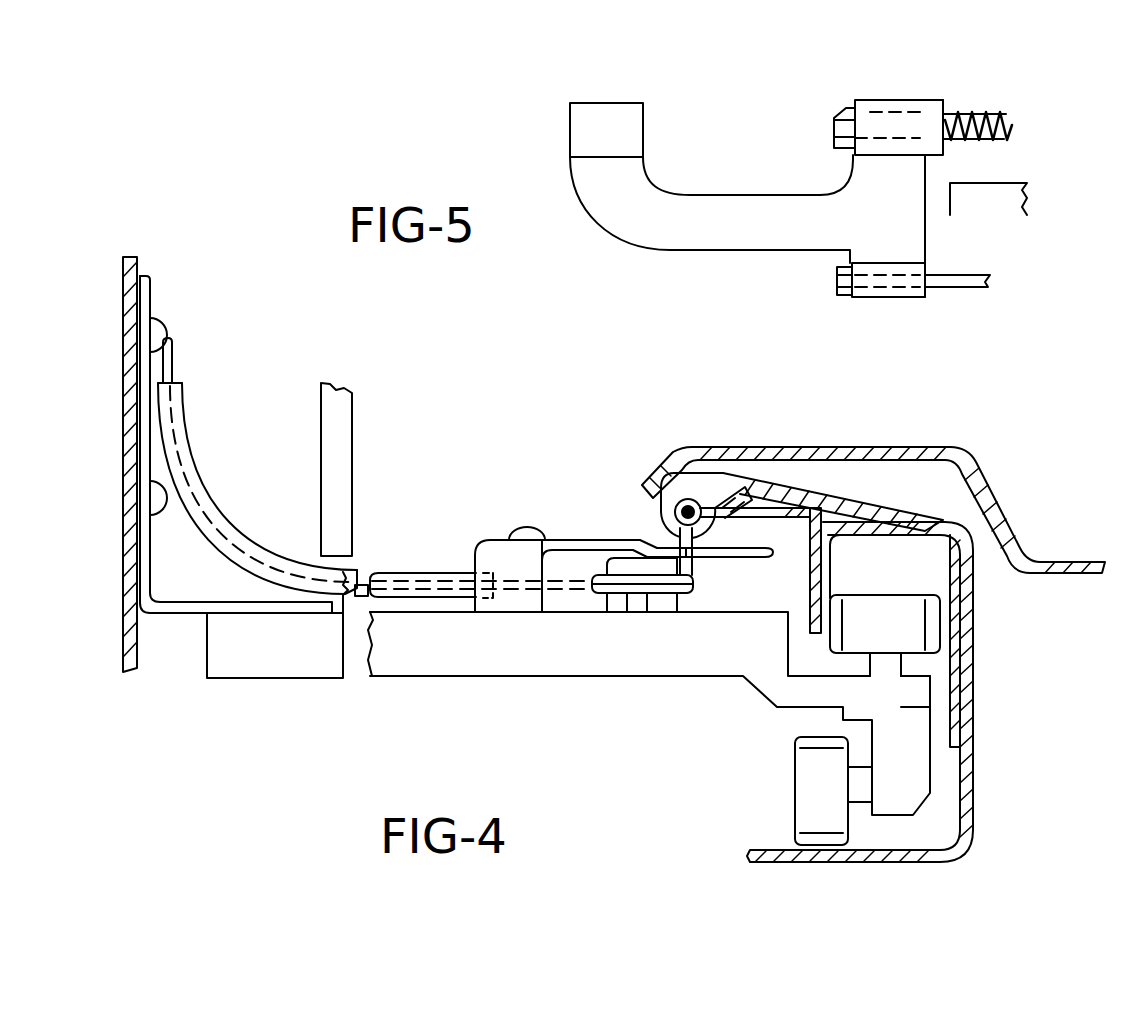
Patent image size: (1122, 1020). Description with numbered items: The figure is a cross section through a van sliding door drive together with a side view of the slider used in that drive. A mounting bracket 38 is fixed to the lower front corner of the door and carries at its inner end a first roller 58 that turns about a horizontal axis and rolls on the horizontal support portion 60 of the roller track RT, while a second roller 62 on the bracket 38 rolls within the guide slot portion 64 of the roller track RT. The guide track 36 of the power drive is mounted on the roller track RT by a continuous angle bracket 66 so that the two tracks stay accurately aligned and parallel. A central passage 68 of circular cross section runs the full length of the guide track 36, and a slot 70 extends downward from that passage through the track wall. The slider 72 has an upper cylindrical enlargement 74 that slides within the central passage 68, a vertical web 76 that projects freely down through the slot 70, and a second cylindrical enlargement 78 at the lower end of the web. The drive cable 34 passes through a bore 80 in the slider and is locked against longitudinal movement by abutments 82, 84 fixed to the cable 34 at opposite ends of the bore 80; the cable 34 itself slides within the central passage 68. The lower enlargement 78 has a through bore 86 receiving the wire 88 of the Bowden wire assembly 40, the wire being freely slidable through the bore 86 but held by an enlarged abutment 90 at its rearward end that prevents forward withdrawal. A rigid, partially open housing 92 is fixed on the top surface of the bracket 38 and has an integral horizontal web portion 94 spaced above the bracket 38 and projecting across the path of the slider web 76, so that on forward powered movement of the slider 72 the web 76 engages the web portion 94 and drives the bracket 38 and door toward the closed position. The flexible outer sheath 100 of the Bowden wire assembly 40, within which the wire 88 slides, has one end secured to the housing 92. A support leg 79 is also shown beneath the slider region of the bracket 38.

In FIG. 5, the cable 34 is at (963, 110).
In FIG. 4, the guide track 36 is at (657, 503).
In FIG. 4, the mounting bracket 38 is at (483, 680).
In FIG. 4, the Bowden wire assembly 40 is at (407, 574).
In FIG. 4, the first roller 58 is at (803, 775).
In FIG. 4, the horizontal support portion 60 is at (863, 862).
In FIG. 4, the second roller 62 is at (925, 608).
In FIG. 4, the guide slot portion 64 is at (830, 583).
In FIG. 4, the continuous angle bracket 66 is at (807, 567).
In FIG. 4, the central passage 68 is at (713, 490).
In FIG. 4, the slot 70 is at (677, 532).
In FIG. 5, the slider 72 is at (687, 230).
In FIG. 4, the slider 72 is at (698, 542).
In FIG. 5, the cylindrical enlargement 74 is at (598, 113).
In FIG. 4, the cylindrical enlargement 74 is at (693, 503).
In FIG. 5, the vertical web 76 is at (913, 177).
In FIG. 4, the vertical web 76 is at (697, 567).
In FIG. 5, the second cylindrical enlargement 78 is at (897, 293).
In FIG. 4, the support leg 79 is at (697, 585).
In FIG. 5, the bore 80 is at (897, 117).
In FIG. 5, the abutment 82 is at (840, 112).
In FIG. 5, the abutment 84 is at (933, 108).
In FIG. 5, the through bore 86 is at (882, 278).
In FIG. 5, the wire 88 is at (983, 277).
In FIG. 4, the wire 88 is at (573, 592).
In FIG. 5, the enlarged abutment 90 is at (840, 295).
In FIG. 4, the housing 92 is at (560, 535).
In FIG. 4, the horizontal web portion 94 is at (833, 508).
In FIG. 4, the flexible outer sheath 100 is at (208, 484).
In FIG. 4, the roller track RT is at (975, 722).